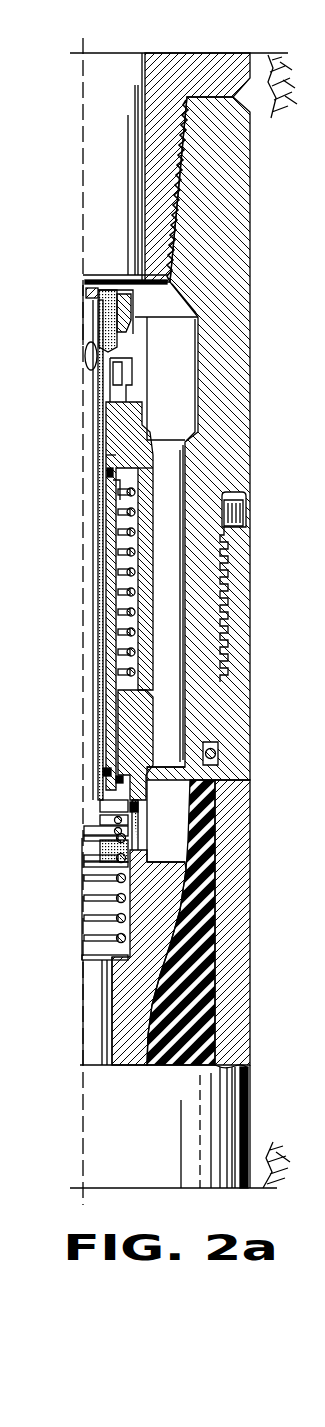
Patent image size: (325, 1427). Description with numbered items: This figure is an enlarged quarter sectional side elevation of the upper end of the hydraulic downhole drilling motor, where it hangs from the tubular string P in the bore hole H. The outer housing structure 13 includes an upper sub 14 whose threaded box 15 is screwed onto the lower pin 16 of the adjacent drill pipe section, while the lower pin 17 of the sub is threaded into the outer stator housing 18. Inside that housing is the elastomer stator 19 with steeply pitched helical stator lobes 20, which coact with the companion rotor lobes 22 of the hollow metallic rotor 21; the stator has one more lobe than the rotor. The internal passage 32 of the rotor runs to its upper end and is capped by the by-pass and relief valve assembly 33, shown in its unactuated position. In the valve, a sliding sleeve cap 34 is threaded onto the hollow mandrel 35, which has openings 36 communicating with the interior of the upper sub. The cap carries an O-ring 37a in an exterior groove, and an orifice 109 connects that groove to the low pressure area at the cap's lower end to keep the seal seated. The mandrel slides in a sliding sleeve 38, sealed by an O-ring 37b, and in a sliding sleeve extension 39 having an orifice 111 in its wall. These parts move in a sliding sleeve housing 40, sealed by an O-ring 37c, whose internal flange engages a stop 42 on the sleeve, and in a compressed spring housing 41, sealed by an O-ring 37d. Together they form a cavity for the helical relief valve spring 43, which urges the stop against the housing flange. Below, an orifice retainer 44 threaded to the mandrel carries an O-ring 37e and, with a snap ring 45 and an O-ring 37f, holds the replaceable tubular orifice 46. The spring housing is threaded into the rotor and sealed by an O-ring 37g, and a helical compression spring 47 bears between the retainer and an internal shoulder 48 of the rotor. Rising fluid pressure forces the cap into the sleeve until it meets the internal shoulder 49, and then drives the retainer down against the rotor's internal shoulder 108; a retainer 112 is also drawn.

The tubular string P is at (118, 73).
The bore hole H is at (262, 53).
The outer housing structure 13 is at (250, 443).
The upper sub 14 is at (237, 367).
The threaded box 15 is at (253, 160).
The lower pin 16 is at (160, 194).
The lower pin 17 is at (210, 592).
The outer stator housing 18 is at (240, 845).
The stator 19 is at (214, 971).
The stator lobes 20 is at (195, 1034).
The rotor 21 is at (142, 840).
The rotor lobes 22 is at (165, 917).
The internal passage 32 is at (95, 1003).
The by-pass and relief valve assembly 33 is at (164, 492).
The sliding sleeve cap 34 is at (95, 295).
The hollow mandrel 35 is at (98, 336).
The openings 36 is at (86, 364).
The O-ring 37a is at (139, 318).
The O-ring 37b is at (110, 475).
The O-ring 37c is at (144, 415).
The O-ring 37d is at (110, 628).
The O-ring 37e is at (100, 822).
The O-ring 37f is at (100, 862).
The O-ring 37g is at (100, 773).
The sliding sleeve 38 is at (134, 358).
The sliding sleeve extension 39 is at (106, 545).
The sliding sleeve housing 40 is at (146, 422).
The compressed spring housing 41 is at (148, 700).
The stop 42 is at (108, 481).
The helical relief valve spring 43 is at (150, 655).
The orifice retainer 44 is at (100, 880).
The snap ring 45 is at (100, 832).
The tubular orifice 46 is at (100, 848).
The helical compression spring 47 is at (90, 895).
The internal shoulder 48 is at (115, 980).
The internal shoulder 49 is at (131, 386).
The internal shoulder 108 is at (139, 834).
The orifice 109 is at (101, 320).
The orifice 111 is at (115, 605).
The retainer 112 is at (105, 793).